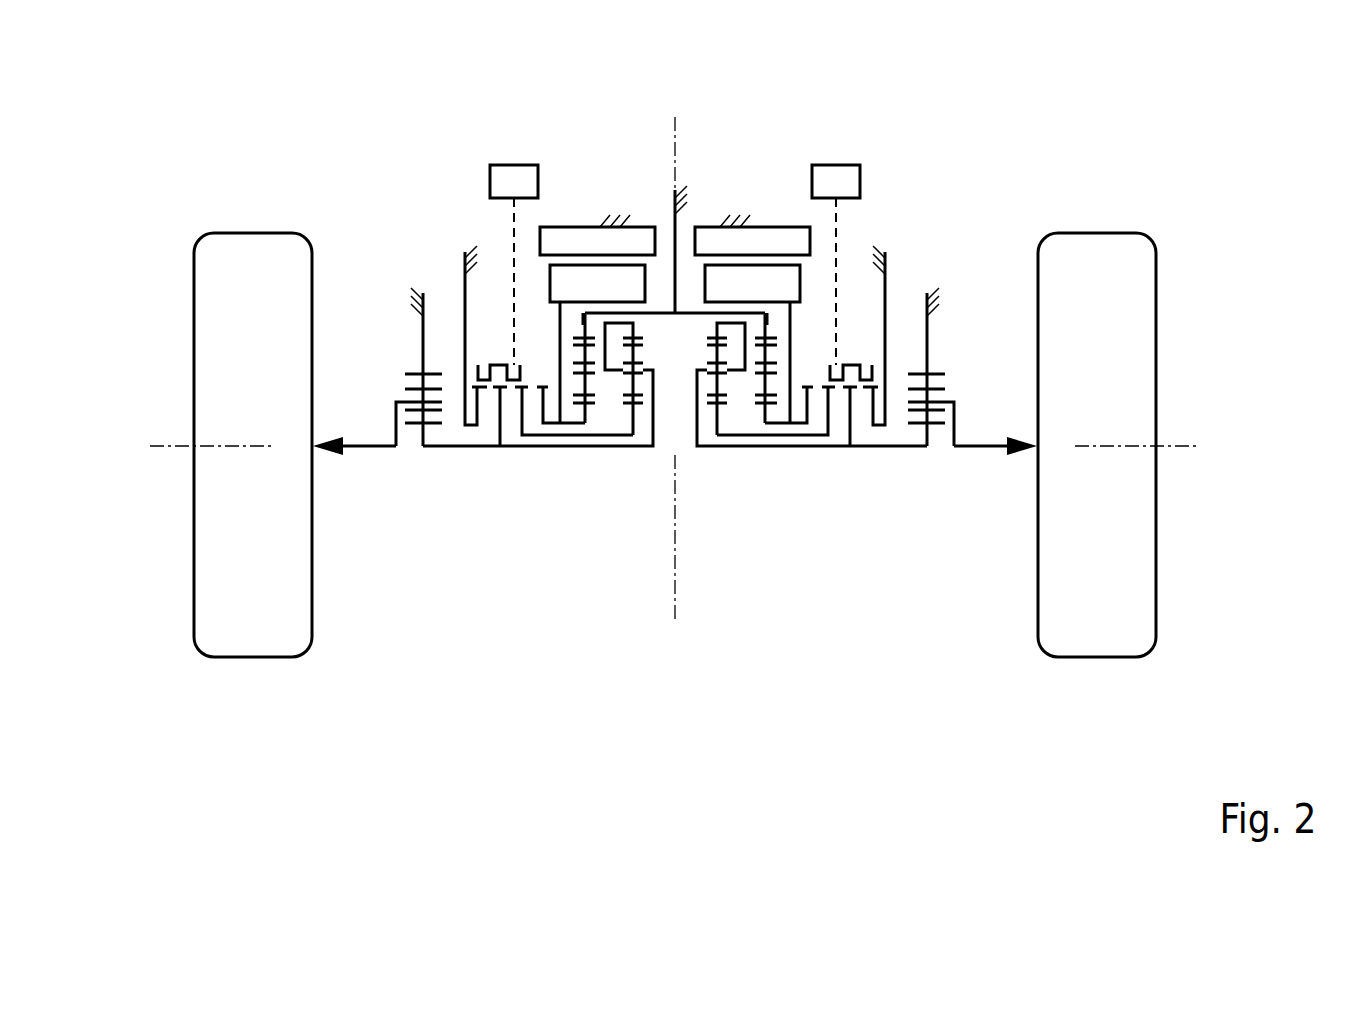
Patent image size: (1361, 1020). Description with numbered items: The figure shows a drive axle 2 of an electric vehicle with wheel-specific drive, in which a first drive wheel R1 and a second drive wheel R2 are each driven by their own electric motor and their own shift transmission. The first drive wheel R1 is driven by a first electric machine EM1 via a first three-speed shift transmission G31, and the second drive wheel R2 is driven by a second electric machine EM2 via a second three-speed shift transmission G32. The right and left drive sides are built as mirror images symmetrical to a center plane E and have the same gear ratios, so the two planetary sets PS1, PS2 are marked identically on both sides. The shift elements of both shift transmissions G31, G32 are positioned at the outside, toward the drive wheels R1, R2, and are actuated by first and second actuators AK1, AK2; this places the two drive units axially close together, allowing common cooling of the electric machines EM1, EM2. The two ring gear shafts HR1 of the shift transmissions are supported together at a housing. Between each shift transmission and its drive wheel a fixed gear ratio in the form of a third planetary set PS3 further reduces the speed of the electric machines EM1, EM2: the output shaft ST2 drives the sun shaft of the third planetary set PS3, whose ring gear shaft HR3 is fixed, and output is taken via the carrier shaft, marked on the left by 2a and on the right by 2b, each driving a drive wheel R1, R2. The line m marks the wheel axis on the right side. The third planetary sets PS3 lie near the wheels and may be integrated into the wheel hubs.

The drive axle 2 is at (1024, 179).
The carrier shaft 2a is at (360, 449).
The carrier shaft 2b is at (990, 449).
The first drive wheel R1 is at (277, 620).
The second drive wheel R2 is at (1073, 622).
The wheel axis / center line m is at (1182, 447).
The center plane E is at (675, 133).
The first electric machine EM1 is at (578, 222).
The second electric machine EM2 is at (766, 222).
The first actuator AK1 is at (510, 177).
The second actuator AK2 is at (838, 177).
The ring gear shaft HR1 is at (583, 323).
The ring gear shaft HR3 is at (928, 343).
The first planetary set PS1 is at (585, 460).
The second planetary set PS2 is at (633, 460).
The third planetary set PS3 is at (423, 460).
The output shaft ST2 is at (466, 450).
The first three-speed shift transmission G31 is at (606, 632).
The second three-speed shift transmission G32 is at (758, 632).